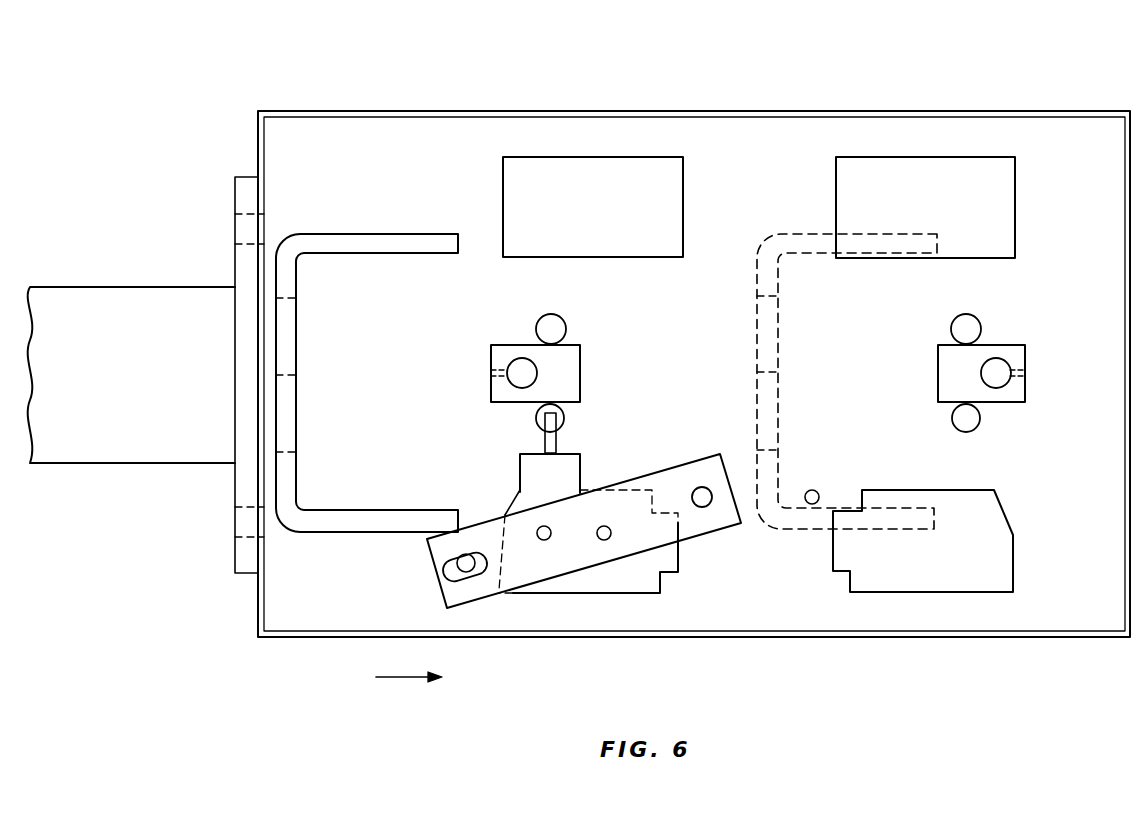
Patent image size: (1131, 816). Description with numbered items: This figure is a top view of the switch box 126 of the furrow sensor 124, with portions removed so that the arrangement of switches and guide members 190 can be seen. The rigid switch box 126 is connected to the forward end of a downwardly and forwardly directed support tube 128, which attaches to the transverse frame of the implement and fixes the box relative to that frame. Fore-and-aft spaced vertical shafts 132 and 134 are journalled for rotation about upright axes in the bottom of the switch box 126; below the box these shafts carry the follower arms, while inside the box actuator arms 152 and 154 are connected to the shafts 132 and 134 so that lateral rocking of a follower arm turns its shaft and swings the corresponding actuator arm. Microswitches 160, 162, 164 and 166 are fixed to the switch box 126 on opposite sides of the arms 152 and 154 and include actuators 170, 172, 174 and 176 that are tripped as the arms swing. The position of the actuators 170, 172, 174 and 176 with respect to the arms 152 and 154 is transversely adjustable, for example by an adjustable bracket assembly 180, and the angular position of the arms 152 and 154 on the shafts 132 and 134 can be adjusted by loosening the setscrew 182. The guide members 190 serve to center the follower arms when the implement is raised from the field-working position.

The furrow sensor 124 is at (184, 88).
The switch box 126 is at (846, 110).
The support tube 128 is at (154, 286).
The vertical shaft 132 is at (522, 358).
The vertical shaft 134 is at (996, 358).
The actuator arm 152 is at (580, 375).
The actuator arm 154 is at (938, 375).
The microswitch 160 is at (678, 553).
The microswitch 162 is at (994, 157).
The microswitch 164 is at (660, 157).
The microswitch 166 is at (1003, 512).
The actuator 170 is at (564, 420).
The actuator 172 is at (956, 320).
The actuator 174 is at (565, 324).
The actuator 176 is at (953, 420).
The adjustable bracket assembly 180 is at (437, 577).
The setscrew 182 is at (491, 375).
The guide member 190 is at (300, 258).